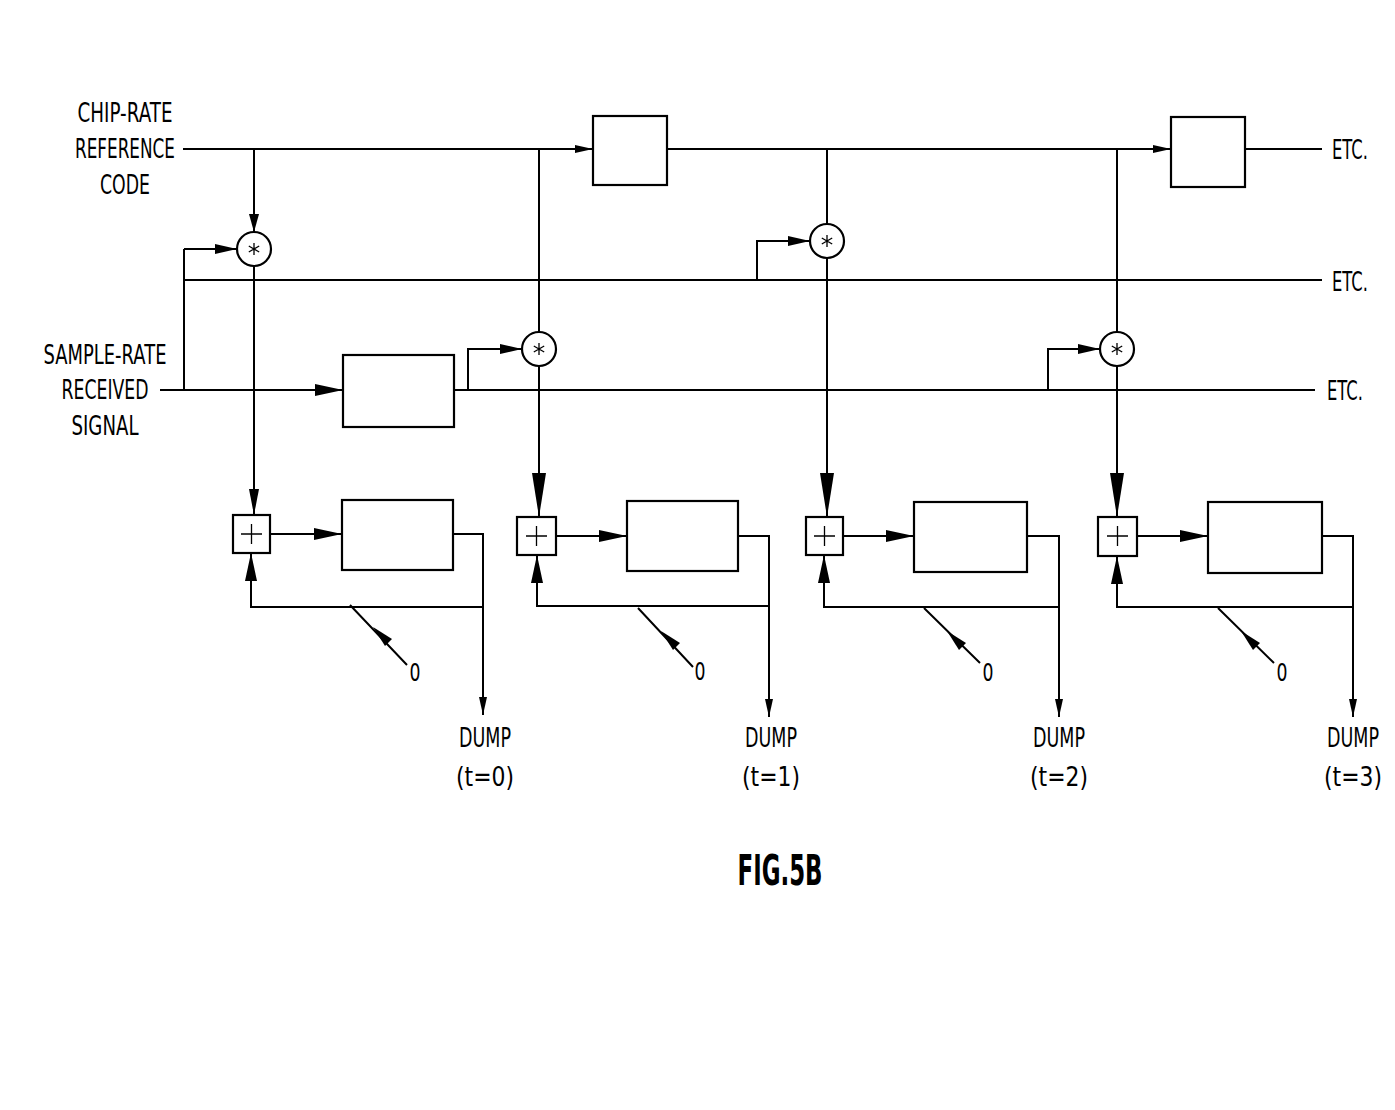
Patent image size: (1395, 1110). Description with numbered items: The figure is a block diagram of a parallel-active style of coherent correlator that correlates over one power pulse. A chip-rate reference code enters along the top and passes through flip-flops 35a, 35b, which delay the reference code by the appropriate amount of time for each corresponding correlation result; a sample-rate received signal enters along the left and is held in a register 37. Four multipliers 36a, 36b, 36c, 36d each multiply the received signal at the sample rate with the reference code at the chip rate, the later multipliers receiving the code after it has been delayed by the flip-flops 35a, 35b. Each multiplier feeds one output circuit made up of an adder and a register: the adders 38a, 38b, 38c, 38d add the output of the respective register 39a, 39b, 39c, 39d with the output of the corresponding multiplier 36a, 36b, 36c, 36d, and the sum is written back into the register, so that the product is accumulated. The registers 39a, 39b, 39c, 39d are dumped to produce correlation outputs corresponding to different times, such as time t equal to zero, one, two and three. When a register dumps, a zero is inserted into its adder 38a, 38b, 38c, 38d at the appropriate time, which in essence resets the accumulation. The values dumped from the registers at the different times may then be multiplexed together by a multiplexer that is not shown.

The flip-flop 35a is at (643, 116).
The flip-flop 35b is at (1207, 117).
The multiplier 36a is at (267, 259).
The multiplier 36b is at (552, 360).
The multiplier 36c is at (838, 252).
The multiplier 36d is at (1130, 360).
The register 37 is at (387, 355).
The adder 38a is at (232, 540).
The adder 38b is at (556, 524).
The adder 38c is at (843, 522).
The adder 38d is at (1137, 528).
The register 39a is at (387, 500).
The register 39b is at (682, 501).
The register 39c is at (960, 502).
The register 39d is at (1265, 502).